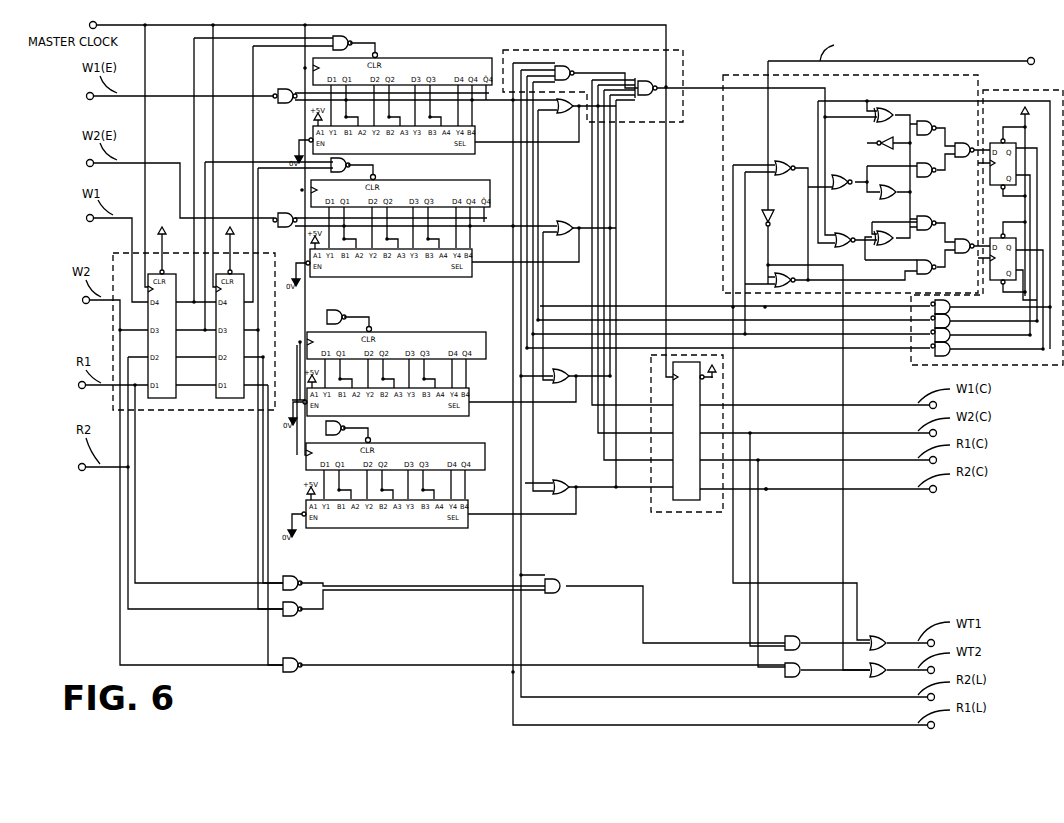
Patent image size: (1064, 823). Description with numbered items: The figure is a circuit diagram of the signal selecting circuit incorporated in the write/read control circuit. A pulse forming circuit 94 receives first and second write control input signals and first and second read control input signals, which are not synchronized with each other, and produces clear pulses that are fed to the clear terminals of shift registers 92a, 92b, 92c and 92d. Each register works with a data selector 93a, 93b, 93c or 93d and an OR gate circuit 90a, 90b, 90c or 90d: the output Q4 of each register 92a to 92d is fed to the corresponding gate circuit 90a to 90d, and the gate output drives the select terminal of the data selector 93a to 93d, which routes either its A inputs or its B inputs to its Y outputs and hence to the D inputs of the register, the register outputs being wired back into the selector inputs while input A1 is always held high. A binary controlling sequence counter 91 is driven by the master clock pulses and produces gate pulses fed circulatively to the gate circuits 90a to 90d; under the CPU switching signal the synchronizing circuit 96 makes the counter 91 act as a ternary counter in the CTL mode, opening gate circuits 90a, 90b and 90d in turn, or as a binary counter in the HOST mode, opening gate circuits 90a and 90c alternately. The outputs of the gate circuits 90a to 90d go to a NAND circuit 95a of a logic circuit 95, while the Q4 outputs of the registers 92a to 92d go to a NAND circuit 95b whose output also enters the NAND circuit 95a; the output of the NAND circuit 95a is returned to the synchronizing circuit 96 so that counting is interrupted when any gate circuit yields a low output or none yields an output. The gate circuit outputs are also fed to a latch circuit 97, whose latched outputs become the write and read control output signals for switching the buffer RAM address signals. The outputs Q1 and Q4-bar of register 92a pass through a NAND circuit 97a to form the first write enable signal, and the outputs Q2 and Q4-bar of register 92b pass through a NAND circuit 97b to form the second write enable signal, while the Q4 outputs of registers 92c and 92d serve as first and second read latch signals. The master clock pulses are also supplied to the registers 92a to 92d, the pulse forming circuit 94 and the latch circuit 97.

The OR gate circuit 90a is at (566, 112).
The OR gate circuit 90b is at (566, 222).
The OR gate circuit 90c is at (562, 384).
The OR gate circuit 90d is at (562, 483).
The binary controlling sequence counter 91 is at (1010, 92).
The shift register 92a is at (398, 58).
The shift register 92b is at (398, 180).
The shift register 92c is at (408, 332).
The shift register 92d is at (400, 443).
The data selector 93a is at (470, 154).
The data selector 93b is at (408, 277).
The data selector 93c is at (467, 415).
The data selector 93d is at (410, 528).
The pulse forming circuit 94 is at (168, 412).
The logic circuit 95 is at (593, 94).
The NAND circuit 95a is at (642, 70).
The NAND circuit 95b is at (564, 64).
The synchronizing circuit 96 is at (738, 73).
The latch circuit 97 is at (648, 503).
The NAND circuit 97a is at (284, 88).
The NAND circuit 97b is at (284, 211).